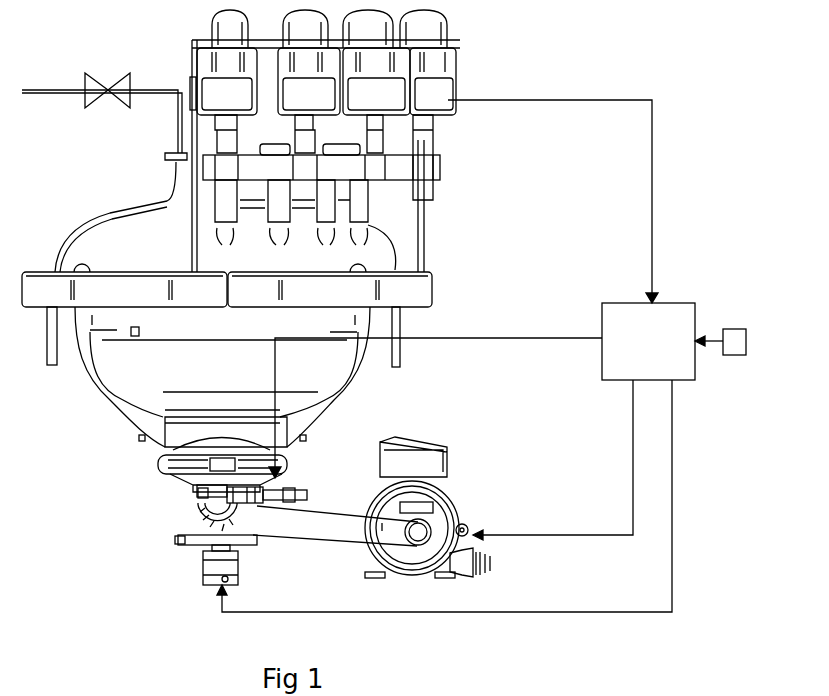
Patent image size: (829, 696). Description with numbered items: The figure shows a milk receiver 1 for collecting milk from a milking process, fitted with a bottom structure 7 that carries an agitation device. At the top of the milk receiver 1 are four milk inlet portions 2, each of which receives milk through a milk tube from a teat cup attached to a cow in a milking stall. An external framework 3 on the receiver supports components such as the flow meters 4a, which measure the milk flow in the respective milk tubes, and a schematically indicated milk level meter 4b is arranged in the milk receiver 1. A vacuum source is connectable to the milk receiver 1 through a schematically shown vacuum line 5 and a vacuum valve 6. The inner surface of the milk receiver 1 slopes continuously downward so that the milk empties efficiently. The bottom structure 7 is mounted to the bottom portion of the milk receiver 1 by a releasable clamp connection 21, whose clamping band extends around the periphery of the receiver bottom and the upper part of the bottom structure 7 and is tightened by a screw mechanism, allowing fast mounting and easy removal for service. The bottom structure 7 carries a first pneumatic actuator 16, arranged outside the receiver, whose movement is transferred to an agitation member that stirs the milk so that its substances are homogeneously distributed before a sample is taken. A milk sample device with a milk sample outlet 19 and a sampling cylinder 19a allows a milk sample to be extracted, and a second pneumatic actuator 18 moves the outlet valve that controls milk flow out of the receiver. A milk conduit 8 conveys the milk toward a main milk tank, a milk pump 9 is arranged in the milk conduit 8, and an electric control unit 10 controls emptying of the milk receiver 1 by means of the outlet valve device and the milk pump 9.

The milk receiver 1 is at (110, 222).
The milk inlet portions 2 is at (328, 195).
The external framework 3 is at (203, 240).
The flow meters 4a is at (440, 95).
The milk level meter 4b is at (737, 332).
The vacuum line 5 is at (63, 90).
The vacuum valve 6 is at (110, 88).
The bottom structure 7 is at (130, 459).
The milk conduit 8 is at (362, 527).
The milk pump 9 is at (466, 523).
The electric control unit 10 is at (643, 325).
The first pneumatic actuator 16 is at (275, 490).
The second pneumatic actuator 18 is at (223, 565).
The milk sample outlet 19 is at (257, 503).
The sampling cylinder 19a is at (293, 497).
The releasable clamp connection 21 is at (208, 477).